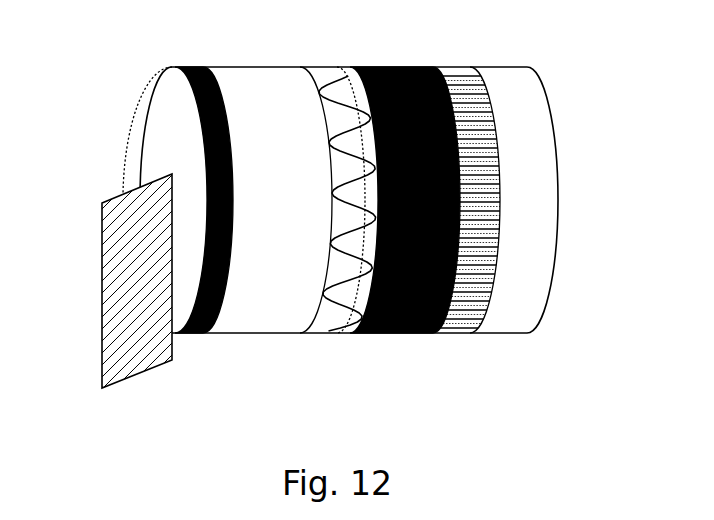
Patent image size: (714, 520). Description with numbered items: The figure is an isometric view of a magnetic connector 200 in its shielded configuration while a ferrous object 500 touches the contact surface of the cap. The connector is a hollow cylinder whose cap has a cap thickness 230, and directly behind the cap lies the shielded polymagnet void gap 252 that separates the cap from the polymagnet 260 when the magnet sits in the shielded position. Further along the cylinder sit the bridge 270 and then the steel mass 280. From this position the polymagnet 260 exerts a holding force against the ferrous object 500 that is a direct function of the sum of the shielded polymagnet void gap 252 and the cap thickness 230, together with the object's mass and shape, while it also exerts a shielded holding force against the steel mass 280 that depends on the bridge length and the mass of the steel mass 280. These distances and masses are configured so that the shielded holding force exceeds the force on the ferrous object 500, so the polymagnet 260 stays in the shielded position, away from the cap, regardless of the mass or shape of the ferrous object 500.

The magnetic connector 200 is at (603, 118).
The cap thickness 230 is at (175, 63).
The shielded polymagnet void gap 252 is at (205, 63).
The polymagnet 260 is at (328, 333).
The bridge 270 is at (395, 333).
The steel mass 280 is at (453, 333).
The ferrous object 500 is at (112, 250).